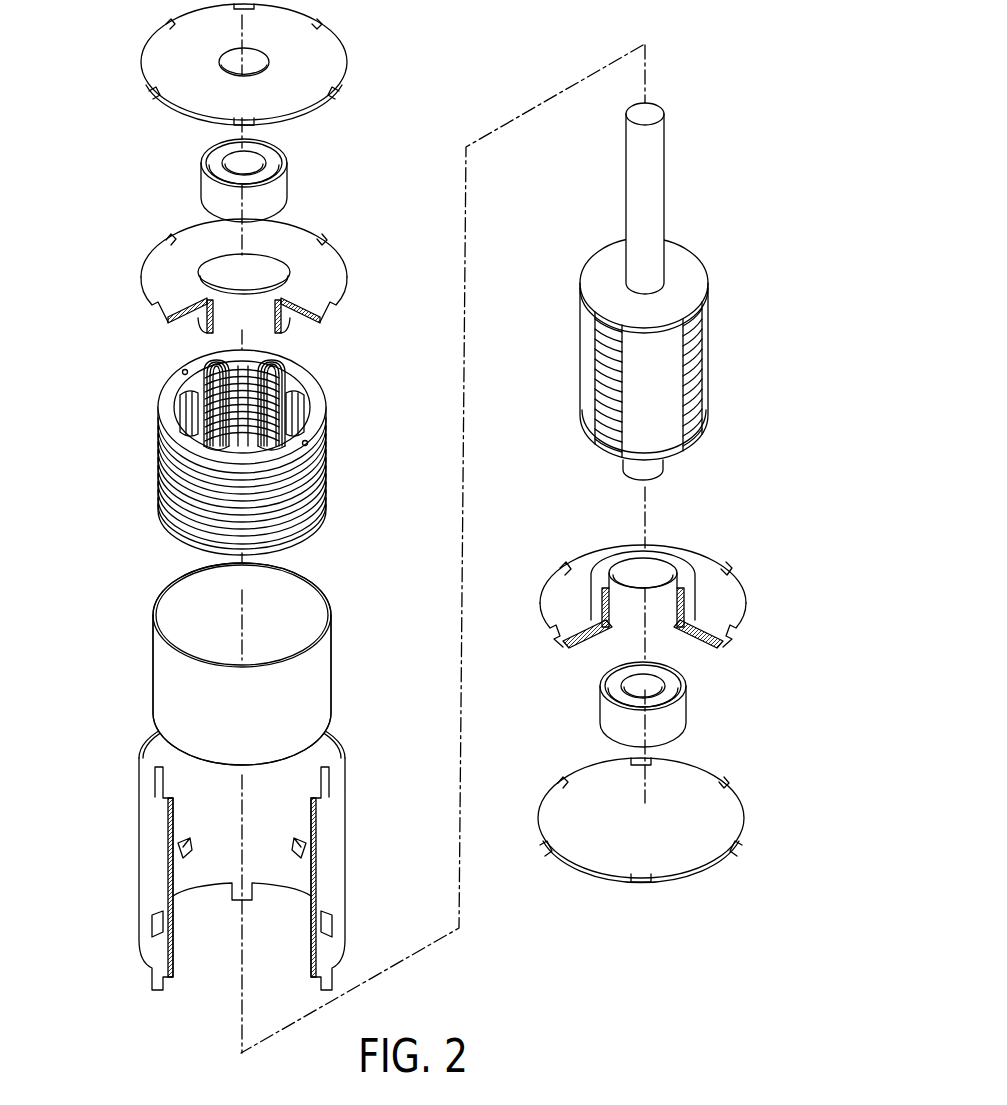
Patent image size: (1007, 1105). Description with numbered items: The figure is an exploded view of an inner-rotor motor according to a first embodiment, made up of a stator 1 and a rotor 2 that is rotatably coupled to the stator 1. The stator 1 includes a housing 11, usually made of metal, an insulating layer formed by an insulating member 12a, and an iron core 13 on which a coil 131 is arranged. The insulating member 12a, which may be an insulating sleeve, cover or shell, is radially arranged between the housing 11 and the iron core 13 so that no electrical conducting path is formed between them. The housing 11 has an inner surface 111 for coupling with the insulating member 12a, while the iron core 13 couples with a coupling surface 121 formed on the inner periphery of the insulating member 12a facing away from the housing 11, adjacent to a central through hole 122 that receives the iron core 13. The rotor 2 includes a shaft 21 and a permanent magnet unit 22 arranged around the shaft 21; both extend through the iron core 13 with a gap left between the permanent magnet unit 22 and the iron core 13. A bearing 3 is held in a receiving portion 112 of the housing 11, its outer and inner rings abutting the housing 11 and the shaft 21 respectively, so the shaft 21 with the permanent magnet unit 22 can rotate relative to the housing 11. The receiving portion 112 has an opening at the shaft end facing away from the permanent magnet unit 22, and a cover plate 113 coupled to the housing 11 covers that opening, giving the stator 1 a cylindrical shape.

The stator 1 is at (114, 352).
The rotor 2 is at (729, 237).
The bearing 3 is at (282, 183).
The housing 11 is at (214, 851).
The inner surface 111 is at (293, 877).
The receiving portion 112 is at (270, 275).
The cover plate 113 is at (333, 50).
The insulating member 12a is at (218, 651).
The coupling surface 121 is at (230, 601).
The through hole 122 is at (305, 610).
The iron core 13 is at (225, 441).
The coil 131 is at (283, 362).
The shaft 21 is at (644, 176).
The permanent magnet unit 22 is at (693, 305).